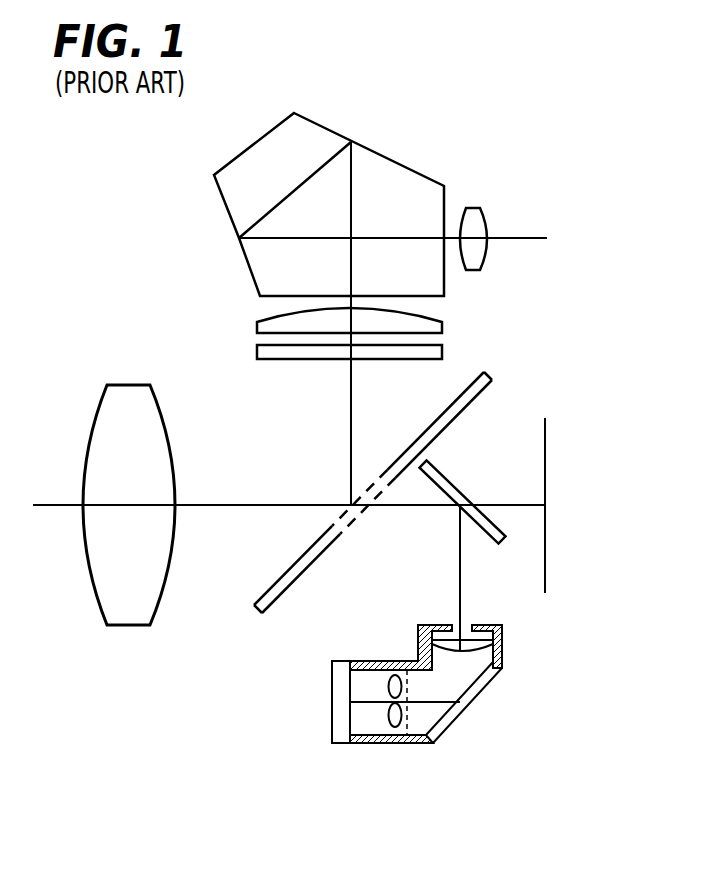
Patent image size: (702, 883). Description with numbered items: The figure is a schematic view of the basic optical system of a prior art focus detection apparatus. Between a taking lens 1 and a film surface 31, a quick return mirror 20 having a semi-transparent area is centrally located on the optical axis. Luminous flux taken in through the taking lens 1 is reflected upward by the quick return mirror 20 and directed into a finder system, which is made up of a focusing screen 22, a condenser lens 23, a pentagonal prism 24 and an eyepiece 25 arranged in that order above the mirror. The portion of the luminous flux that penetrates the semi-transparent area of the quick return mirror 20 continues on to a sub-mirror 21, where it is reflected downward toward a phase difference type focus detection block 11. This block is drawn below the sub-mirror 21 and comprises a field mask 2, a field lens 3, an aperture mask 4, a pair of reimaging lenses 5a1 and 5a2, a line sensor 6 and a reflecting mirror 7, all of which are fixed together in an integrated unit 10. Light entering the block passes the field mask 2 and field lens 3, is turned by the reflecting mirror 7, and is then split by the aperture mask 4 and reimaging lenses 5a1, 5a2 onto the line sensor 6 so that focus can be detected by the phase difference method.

The taking lens 1 is at (122, 610).
The field mask 2 is at (480, 632).
The field lens 3 is at (497, 658).
The aperture mask 4 is at (412, 730).
The reimaging lens 5a1 is at (388, 684).
The reimaging lens 5a2 is at (393, 727).
The line sensor 6 is at (333, 732).
The reflecting mirror 7 is at (478, 695).
The integrated unit 10 is at (420, 661).
The phase difference type focus detection block 11 is at (447, 685).
The quick return mirror 20 is at (262, 612).
The sub-mirror 21 is at (440, 470).
The focusing screen 22 is at (257, 353).
The condenser lens 23 is at (257, 324).
The pentagonal prism 24 is at (387, 177).
The eyepiece 25 is at (483, 208).
The film surface 31 is at (546, 422).